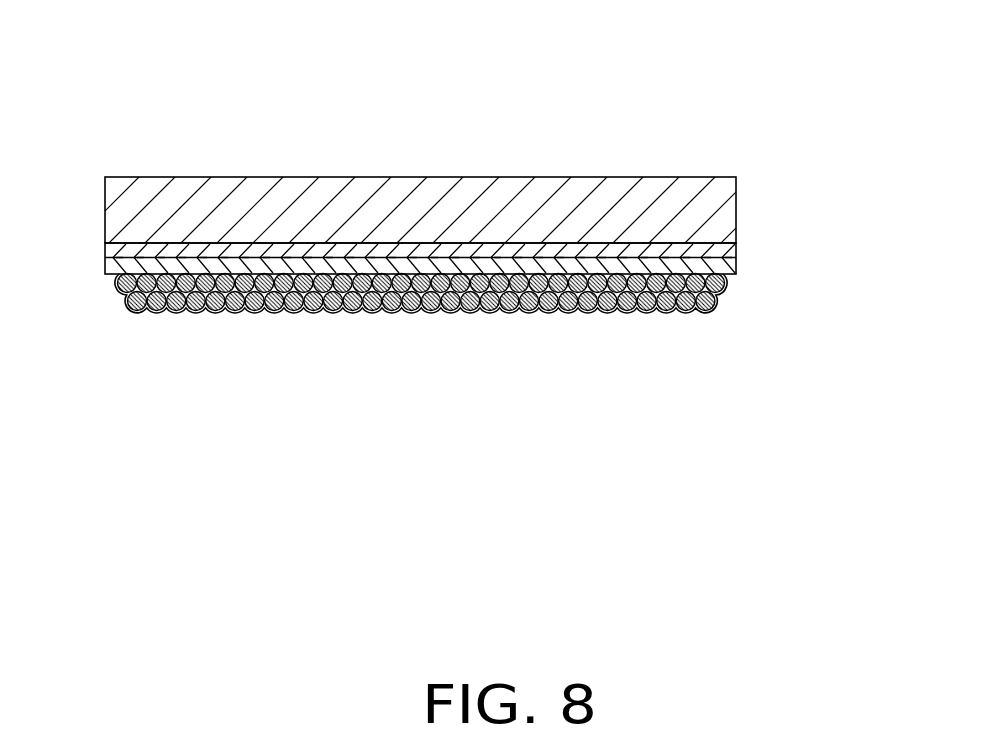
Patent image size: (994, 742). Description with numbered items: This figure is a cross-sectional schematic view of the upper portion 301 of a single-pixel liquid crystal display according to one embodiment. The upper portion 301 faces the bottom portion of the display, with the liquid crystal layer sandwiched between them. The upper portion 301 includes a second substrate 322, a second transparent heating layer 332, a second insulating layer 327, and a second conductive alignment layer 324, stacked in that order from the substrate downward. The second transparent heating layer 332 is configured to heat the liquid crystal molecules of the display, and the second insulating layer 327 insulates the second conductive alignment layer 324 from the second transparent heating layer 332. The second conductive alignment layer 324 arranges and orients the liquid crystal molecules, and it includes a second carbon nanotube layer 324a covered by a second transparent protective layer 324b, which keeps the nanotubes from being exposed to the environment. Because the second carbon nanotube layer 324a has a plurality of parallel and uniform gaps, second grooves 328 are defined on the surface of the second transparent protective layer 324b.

The upper portion 301 is at (426, 56).
The second substrate 322 is at (723, 214).
The second insulating layer 327 is at (736, 262).
The second transparent heating layer 332 is at (106, 253).
The second conductive alignment layer 324 is at (516, 309).
The second carbon nanotube layer 324a is at (722, 281).
The second transparent protective layer 324b is at (707, 311).
The second grooves 328 is at (632, 313).